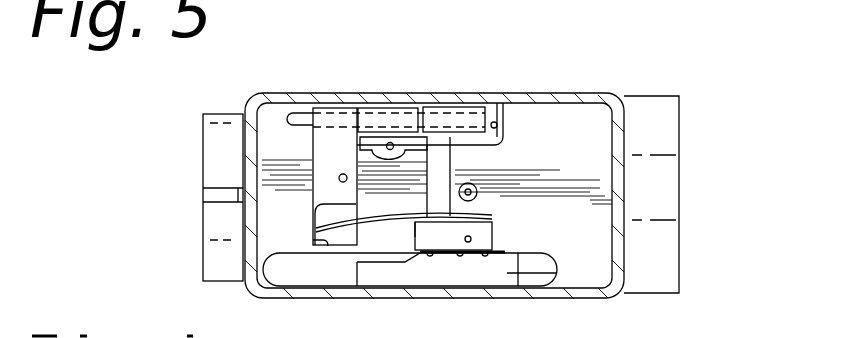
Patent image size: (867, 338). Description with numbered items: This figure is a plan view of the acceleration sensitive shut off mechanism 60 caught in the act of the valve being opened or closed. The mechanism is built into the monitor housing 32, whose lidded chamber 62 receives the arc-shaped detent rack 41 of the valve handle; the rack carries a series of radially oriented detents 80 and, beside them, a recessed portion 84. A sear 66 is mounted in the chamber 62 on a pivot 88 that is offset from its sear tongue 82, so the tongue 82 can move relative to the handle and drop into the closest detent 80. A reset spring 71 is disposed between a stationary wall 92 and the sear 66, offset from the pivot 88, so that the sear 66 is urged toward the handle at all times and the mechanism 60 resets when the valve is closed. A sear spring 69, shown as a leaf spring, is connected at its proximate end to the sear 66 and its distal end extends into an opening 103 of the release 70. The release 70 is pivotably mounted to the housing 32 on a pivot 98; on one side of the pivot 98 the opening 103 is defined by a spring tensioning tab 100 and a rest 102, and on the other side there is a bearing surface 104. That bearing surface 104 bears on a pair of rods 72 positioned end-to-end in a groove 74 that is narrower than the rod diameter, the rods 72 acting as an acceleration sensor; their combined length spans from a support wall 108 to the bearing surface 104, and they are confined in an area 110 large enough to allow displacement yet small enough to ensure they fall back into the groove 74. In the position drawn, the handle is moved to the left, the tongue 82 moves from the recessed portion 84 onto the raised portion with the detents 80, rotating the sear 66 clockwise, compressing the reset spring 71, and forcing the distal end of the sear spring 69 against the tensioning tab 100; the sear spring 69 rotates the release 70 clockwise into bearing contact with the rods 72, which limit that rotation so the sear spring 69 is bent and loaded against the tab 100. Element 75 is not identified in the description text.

The monitor housing 32 is at (600, 104).
The shut off mechanism 60 is at (592, 130).
The lidded chamber 62 is at (565, 158).
The groove 74 is at (262, 106).
The spring tensioning tab 100 is at (240, 196).
The bearing surface 104 is at (303, 110).
The release 70 is at (325, 150).
The pivot 98 is at (339, 178).
The sear spring 69 is at (380, 231).
The opening 103 is at (322, 243).
The sear tongue 82 is at (316, 231).
The area 110 is at (360, 116).
The rods 72 is at (418, 118).
The stationary wall 92 is at (467, 142).
The support wall 108 is at (517, 107).
The reset spring 71 is at (442, 168).
The detents 80 is at (493, 233).
The pivot 88 is at (468, 239).
The sear 66 is at (503, 252).
The rest 102 is at (268, 260).
The stop 75 is at (557, 268).
The arc-shaped detent rack 41 is at (507, 273).
The recessed portion 84 is at (415, 237).